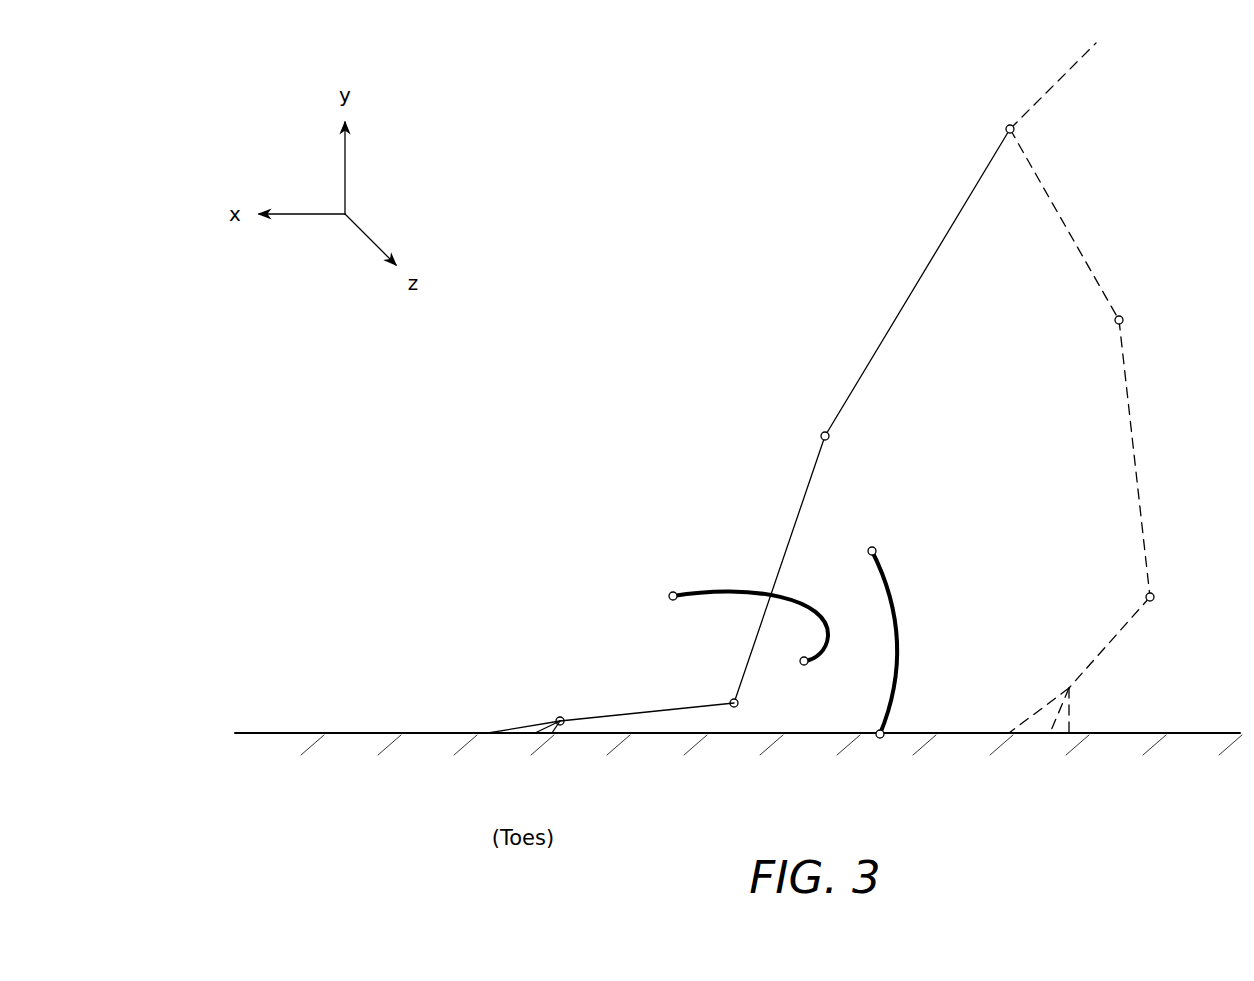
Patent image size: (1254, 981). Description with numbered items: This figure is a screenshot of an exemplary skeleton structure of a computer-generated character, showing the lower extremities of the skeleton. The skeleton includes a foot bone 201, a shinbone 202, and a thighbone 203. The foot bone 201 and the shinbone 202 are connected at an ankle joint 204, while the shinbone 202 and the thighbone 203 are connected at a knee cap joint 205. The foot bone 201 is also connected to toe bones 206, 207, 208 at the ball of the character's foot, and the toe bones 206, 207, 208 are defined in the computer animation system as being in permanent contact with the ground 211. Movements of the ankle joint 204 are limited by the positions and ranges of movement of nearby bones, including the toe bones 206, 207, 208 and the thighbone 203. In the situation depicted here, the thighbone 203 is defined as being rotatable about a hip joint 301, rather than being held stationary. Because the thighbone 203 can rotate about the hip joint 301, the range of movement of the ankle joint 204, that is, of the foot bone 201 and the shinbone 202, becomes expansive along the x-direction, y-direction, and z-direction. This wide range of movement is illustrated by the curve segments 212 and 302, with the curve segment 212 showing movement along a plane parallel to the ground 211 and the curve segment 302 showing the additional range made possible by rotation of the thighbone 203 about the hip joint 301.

The foot bone 201 is at (648, 711).
The shinbone 202 is at (808, 497).
The thighbone 203 is at (887, 331).
The ankle joint 204 is at (759, 712).
The knee cap joint 205 is at (560, 717).
The toe bone 206 is at (505, 745).
The toe bone 207 is at (537, 745).
The toe bone 208 is at (563, 745).
The ground 211 is at (310, 726).
The curve segment 212 is at (743, 590).
The hip joint 301 is at (1010, 124).
The curve segment 302 is at (898, 642).